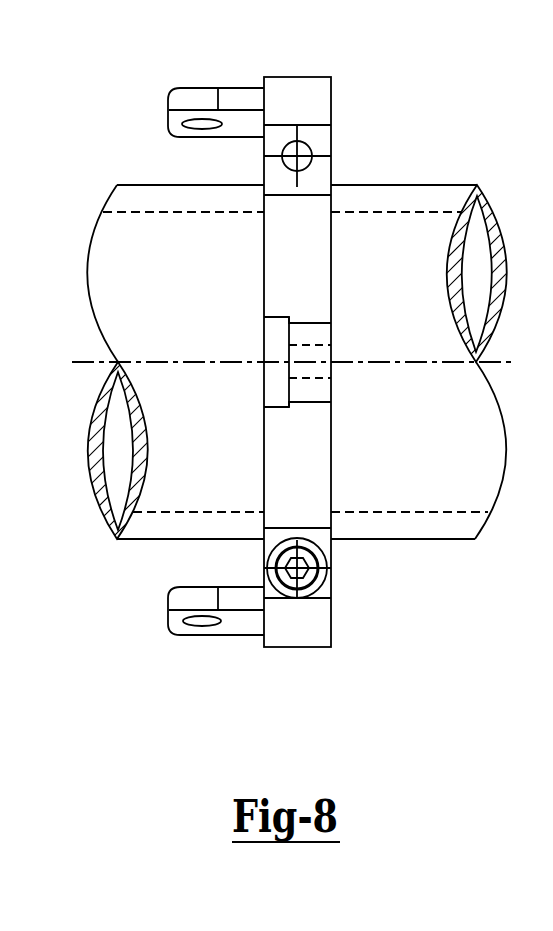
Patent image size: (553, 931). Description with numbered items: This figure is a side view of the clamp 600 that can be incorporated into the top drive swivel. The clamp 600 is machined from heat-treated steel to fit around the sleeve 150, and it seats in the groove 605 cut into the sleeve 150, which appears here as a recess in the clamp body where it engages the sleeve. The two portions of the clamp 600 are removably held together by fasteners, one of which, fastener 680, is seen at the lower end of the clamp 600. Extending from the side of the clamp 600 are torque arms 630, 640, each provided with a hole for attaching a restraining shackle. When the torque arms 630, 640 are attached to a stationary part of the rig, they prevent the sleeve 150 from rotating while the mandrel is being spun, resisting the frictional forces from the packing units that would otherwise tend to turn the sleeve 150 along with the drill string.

The sleeve 150 is at (393, 195).
The clamp 600 is at (306, 88).
The groove 605 is at (335, 303).
The torque arm 630 is at (186, 86).
The torque arm 640 is at (168, 623).
The fastener 680 is at (316, 574).